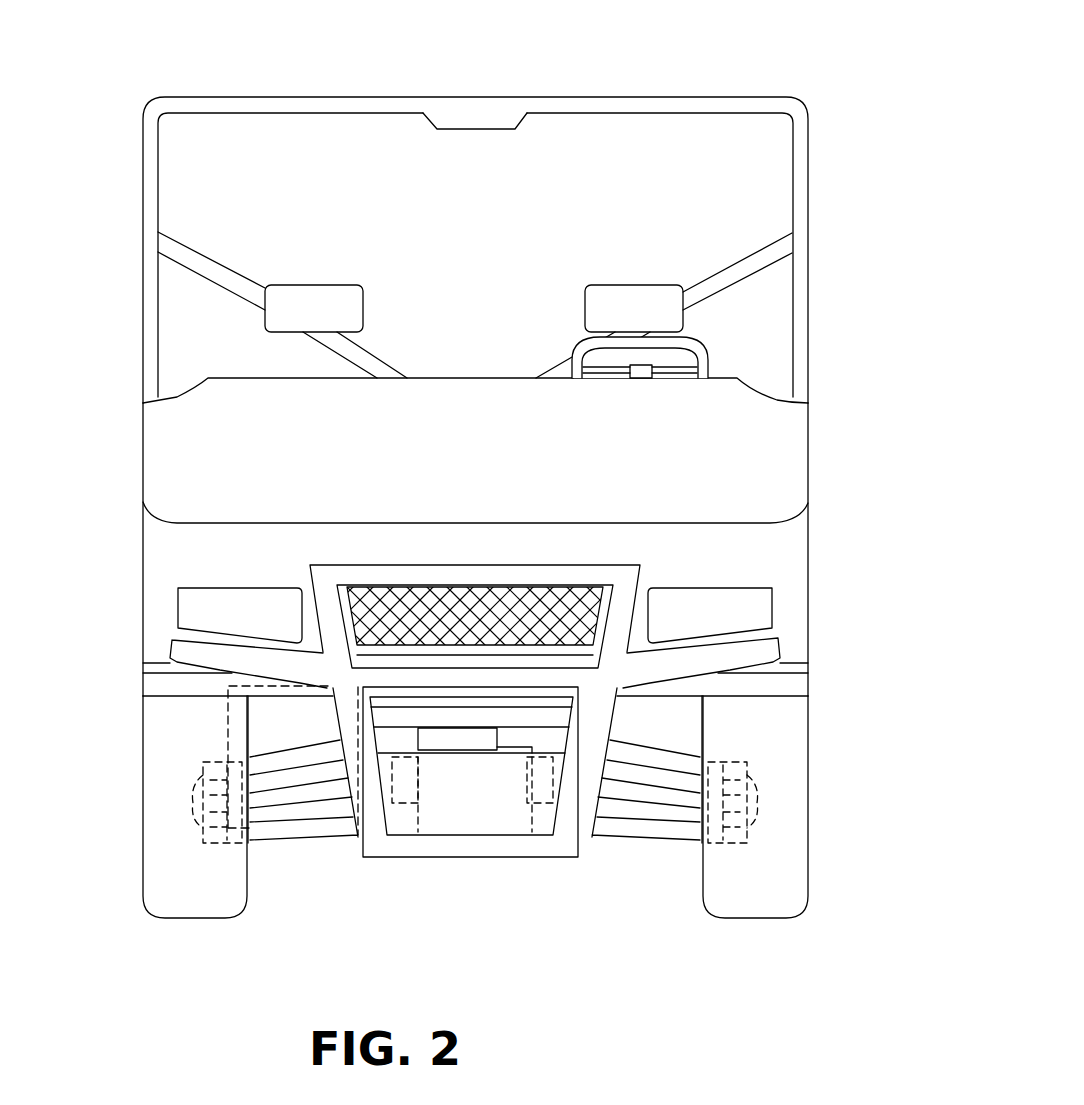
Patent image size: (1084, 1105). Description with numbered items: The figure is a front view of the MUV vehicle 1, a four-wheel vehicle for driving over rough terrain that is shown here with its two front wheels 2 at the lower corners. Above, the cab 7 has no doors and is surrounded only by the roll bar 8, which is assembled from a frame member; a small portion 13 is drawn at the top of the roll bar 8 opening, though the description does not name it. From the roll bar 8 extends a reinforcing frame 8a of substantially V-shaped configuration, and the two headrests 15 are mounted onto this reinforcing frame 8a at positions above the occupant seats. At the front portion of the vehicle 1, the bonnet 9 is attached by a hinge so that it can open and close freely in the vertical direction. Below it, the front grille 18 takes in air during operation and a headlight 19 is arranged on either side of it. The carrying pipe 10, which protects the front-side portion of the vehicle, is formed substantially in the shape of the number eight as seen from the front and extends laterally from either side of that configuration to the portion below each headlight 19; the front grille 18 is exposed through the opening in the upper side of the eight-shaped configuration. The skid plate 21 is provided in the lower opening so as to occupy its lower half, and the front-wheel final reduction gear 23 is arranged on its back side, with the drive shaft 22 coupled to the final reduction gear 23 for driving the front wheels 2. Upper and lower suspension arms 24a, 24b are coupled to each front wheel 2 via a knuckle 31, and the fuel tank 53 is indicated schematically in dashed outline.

The MUV vehicle 1 is at (870, 72).
The front wheel 2 is at (193, 908).
The cab 7 is at (488, 226).
The roll bar 8 is at (809, 188).
The reinforcing frame 8a is at (208, 257).
The bonnet 9 is at (767, 462).
The carrying pipe 10 is at (235, 660).
The windshield upper portion 13 is at (523, 120).
The headrest 15 is at (320, 283).
The front grille 18 is at (557, 595).
The headlight 19 is at (187, 610).
The skid plate 21 is at (403, 825).
The drive shaft 22 is at (302, 793).
The front-wheel final reduction gear 23 is at (460, 808).
The upper suspension arm 24a is at (275, 758).
The lower suspension arm 24b is at (332, 832).
The knuckle 31 is at (190, 803).
The fuel tank 53 is at (226, 728).